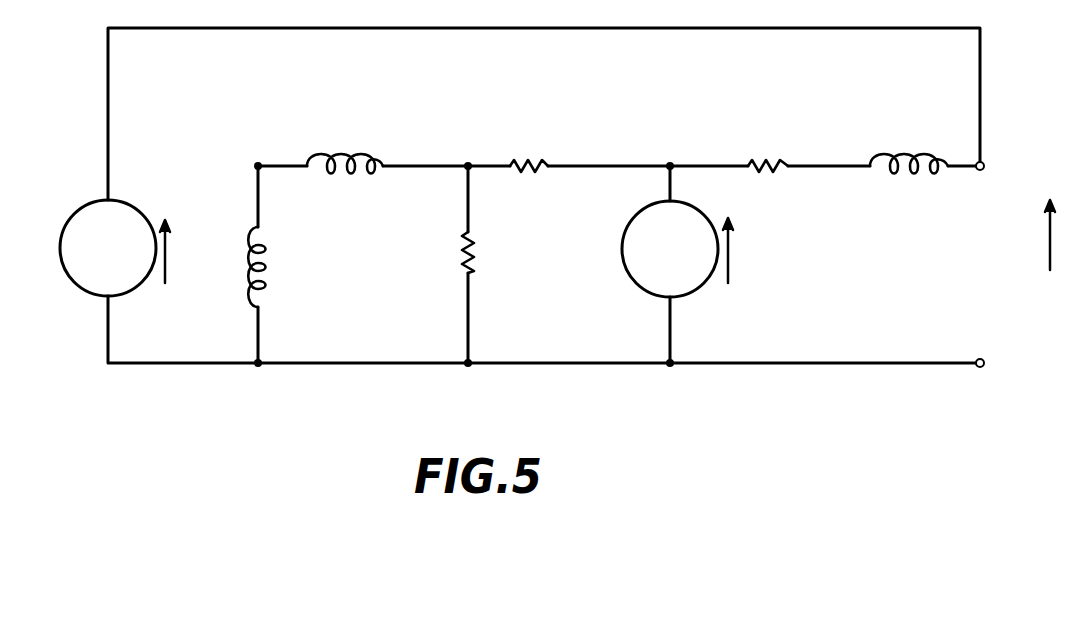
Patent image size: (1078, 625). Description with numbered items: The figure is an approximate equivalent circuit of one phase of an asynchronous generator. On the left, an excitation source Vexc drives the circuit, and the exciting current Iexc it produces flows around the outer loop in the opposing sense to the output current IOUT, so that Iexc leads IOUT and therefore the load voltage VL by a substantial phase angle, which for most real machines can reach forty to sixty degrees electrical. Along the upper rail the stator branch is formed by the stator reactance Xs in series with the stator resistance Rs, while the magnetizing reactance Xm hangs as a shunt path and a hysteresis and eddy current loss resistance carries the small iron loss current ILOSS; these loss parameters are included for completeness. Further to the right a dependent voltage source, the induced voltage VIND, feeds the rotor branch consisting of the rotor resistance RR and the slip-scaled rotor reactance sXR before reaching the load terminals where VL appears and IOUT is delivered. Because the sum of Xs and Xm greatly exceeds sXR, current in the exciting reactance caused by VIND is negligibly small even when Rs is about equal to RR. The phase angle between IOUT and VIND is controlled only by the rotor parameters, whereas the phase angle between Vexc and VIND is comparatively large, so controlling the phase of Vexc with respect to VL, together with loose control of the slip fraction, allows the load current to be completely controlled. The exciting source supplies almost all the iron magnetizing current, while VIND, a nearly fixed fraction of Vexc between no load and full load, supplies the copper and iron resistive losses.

The excitation voltage Vexc is at (115, 248).
The magnetizing reactance Xm is at (240, 267).
The stator reactance Xs is at (352, 151).
The stator resistance Rs is at (542, 138).
The iron loss current ILOSS is at (636, 212).
The induced voltage VIND is at (677, 249).
The rotor resistance RR is at (783, 138).
The slip-scaled rotor reactance sXR is at (923, 138).
The excitation current Iexc is at (205, 182).
The output current IOUT is at (920, 190).
The load voltage VL is at (1032, 235).